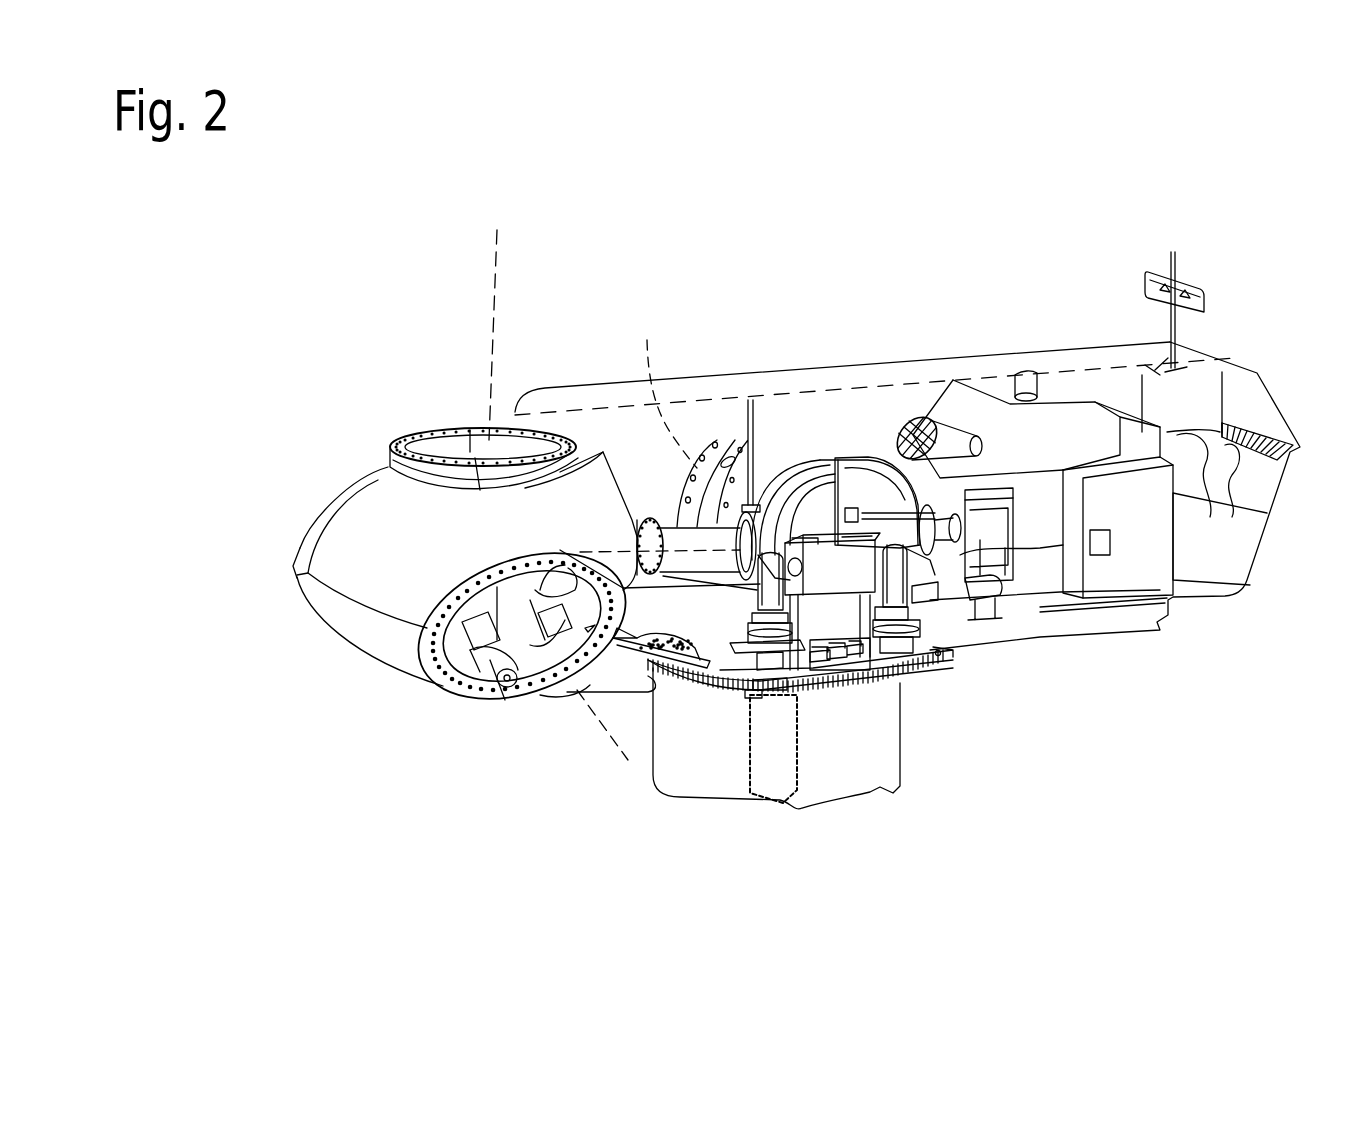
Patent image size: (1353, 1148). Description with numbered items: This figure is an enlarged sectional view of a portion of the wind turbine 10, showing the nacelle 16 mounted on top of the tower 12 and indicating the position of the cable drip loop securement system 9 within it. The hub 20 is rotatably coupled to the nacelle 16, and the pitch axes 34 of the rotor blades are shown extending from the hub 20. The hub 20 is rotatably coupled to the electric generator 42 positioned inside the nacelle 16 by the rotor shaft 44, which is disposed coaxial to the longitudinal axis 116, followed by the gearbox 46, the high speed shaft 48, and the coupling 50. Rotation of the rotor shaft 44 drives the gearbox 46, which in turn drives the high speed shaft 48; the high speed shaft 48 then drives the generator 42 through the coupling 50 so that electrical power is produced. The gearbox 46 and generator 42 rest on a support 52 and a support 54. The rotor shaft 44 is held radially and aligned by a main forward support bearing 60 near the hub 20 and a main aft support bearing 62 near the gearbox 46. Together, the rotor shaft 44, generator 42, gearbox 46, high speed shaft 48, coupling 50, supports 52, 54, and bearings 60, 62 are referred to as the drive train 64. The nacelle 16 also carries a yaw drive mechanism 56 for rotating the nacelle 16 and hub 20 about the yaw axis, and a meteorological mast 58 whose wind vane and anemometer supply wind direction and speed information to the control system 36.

The wind turbine 10 is at (318, 302).
The tower 12 is at (888, 790).
The nacelle 16 is at (882, 312).
The hub 20 is at (286, 561).
The pitch axes 34 is at (495, 252).
The control system 36 is at (1110, 490).
The electric generator 42 is at (1000, 572).
The rotor shaft 44 is at (670, 533).
The gearbox 46 is at (848, 465).
The high speed shaft 48 is at (920, 552).
The coupling 50 is at (950, 487).
The support 52 is at (870, 660).
The support 54 is at (980, 585).
The yaw drive mechanism 56 is at (752, 648).
The meteorological mast 58 is at (1202, 290).
The main forward support bearing 60 is at (640, 555).
The main aft support bearing 62 is at (786, 474).
The drive train 64 is at (715, 443).
The longitudinal axis 116 is at (657, 387).
The cable drip loop securement system 9 is at (785, 810).